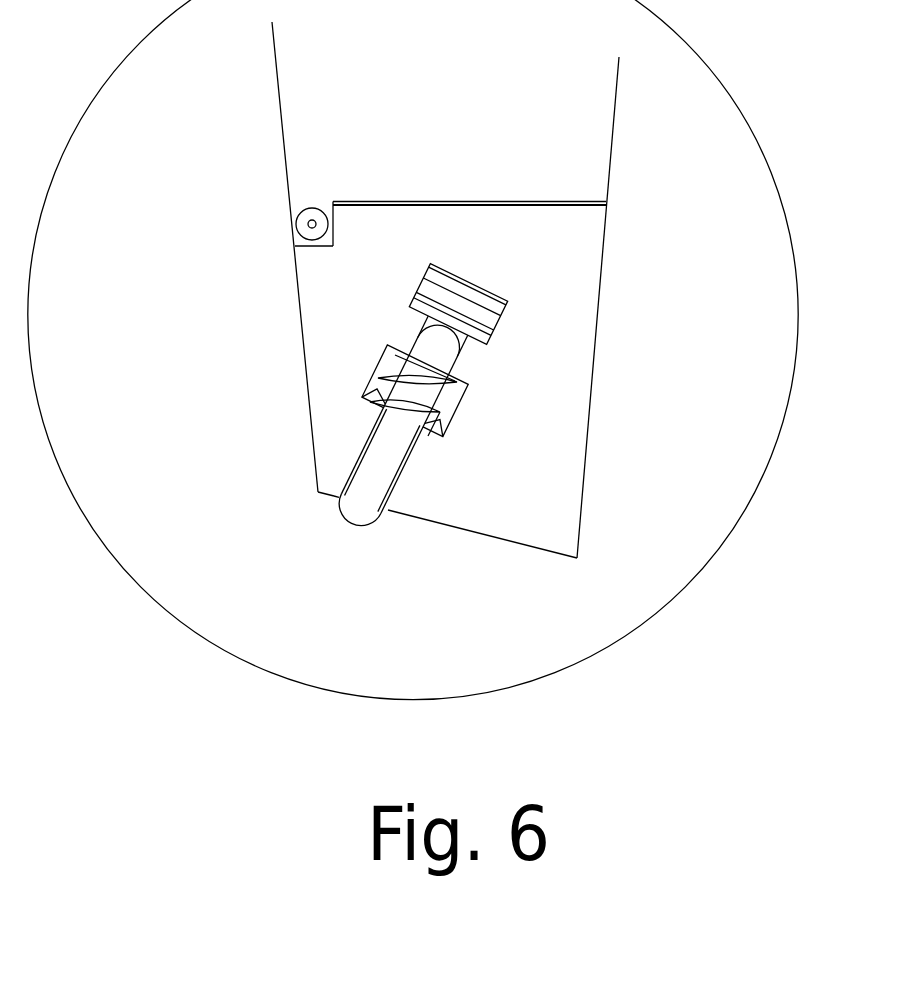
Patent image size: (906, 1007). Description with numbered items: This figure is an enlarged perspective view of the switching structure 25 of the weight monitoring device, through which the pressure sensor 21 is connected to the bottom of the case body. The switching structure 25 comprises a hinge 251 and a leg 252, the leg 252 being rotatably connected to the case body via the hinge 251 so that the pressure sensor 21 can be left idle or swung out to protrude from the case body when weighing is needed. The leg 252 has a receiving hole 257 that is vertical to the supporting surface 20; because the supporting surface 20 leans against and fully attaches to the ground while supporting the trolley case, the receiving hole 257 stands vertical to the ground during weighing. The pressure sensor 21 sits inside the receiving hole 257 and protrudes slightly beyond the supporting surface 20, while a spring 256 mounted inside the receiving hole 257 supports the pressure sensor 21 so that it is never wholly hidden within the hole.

The supporting surface 20 is at (413, 374).
The pressure sensor 21 is at (377, 460).
The switching structure 25 is at (426, 290).
The hinge 251 is at (297, 228).
The leg 252 is at (542, 352).
The spring 256 is at (450, 383).
The receiving hole 257 is at (357, 372).